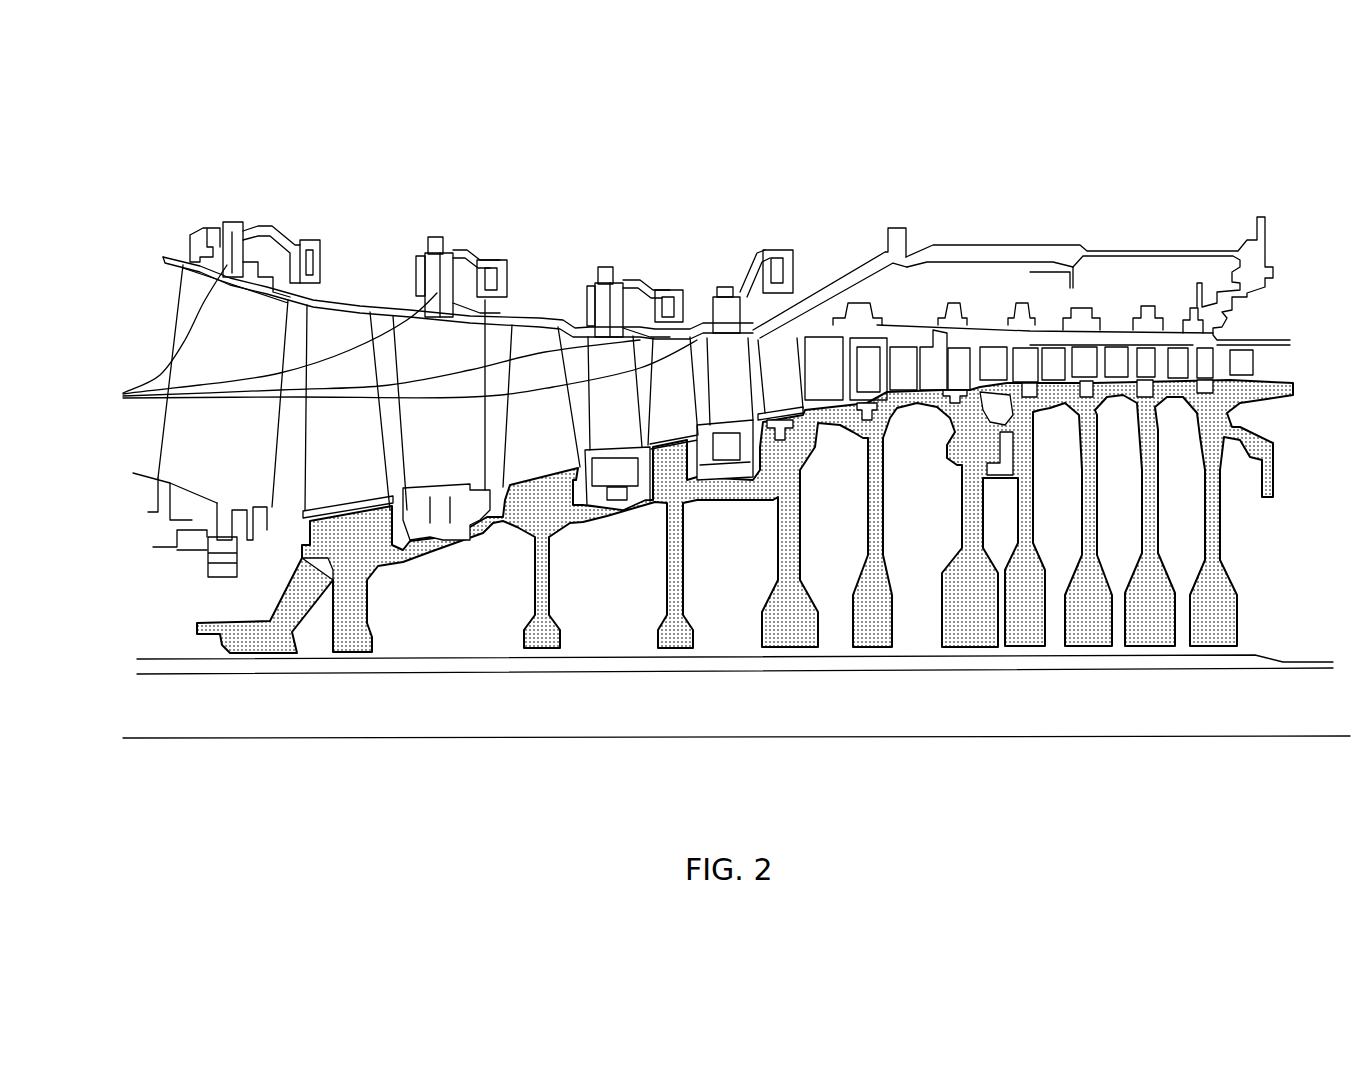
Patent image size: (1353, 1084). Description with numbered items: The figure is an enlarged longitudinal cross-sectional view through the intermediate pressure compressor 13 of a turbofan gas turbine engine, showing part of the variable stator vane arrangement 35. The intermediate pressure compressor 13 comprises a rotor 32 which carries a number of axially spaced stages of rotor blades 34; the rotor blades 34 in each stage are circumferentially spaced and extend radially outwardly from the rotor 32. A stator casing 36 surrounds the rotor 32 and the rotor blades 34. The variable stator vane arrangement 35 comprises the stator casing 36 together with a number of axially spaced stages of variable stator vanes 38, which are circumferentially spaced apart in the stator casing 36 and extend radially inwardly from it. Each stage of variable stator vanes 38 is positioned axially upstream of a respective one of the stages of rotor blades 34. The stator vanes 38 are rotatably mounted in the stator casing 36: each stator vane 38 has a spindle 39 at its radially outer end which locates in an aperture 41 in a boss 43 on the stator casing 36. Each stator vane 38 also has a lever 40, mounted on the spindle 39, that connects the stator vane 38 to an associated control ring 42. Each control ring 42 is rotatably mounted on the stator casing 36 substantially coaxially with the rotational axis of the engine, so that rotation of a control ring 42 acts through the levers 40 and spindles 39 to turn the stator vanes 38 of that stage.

The intermediate pressure compressor 13 is at (973, 230).
The rotor 32 is at (392, 548).
The rotor blades 34 is at (350, 457).
The variable stator vane arrangement 35 is at (852, 203).
The stator casing 36 is at (327, 293).
The variable stator vanes 38 is at (233, 457).
The spindle 39 is at (394, 337).
The lever 40 is at (260, 227).
The aperture 41 is at (227, 270).
The control ring 42 is at (323, 250).
The boss 43 is at (193, 250).